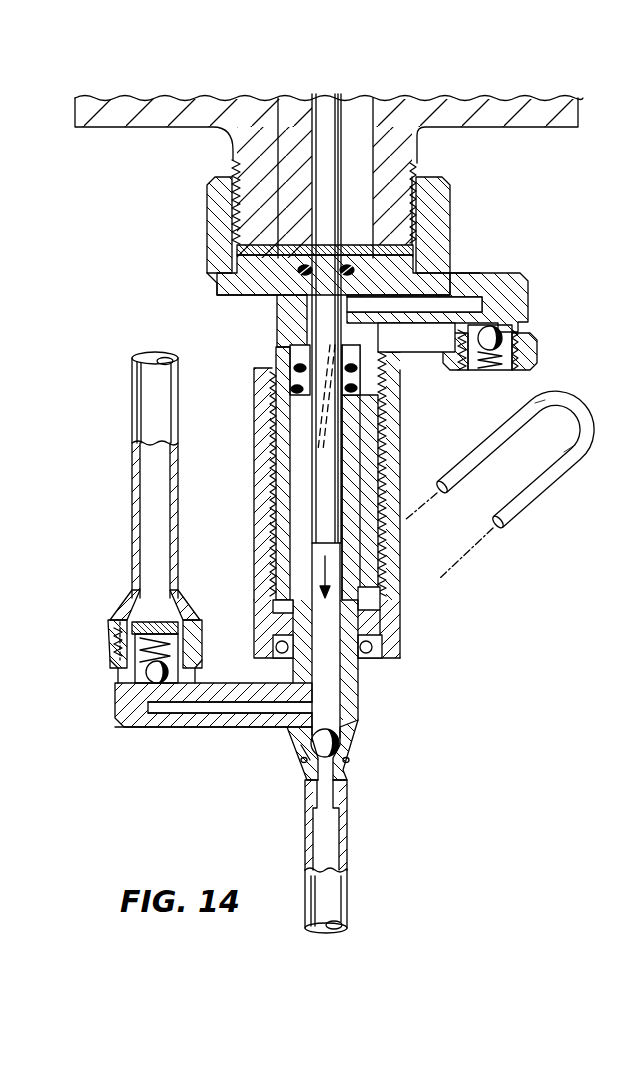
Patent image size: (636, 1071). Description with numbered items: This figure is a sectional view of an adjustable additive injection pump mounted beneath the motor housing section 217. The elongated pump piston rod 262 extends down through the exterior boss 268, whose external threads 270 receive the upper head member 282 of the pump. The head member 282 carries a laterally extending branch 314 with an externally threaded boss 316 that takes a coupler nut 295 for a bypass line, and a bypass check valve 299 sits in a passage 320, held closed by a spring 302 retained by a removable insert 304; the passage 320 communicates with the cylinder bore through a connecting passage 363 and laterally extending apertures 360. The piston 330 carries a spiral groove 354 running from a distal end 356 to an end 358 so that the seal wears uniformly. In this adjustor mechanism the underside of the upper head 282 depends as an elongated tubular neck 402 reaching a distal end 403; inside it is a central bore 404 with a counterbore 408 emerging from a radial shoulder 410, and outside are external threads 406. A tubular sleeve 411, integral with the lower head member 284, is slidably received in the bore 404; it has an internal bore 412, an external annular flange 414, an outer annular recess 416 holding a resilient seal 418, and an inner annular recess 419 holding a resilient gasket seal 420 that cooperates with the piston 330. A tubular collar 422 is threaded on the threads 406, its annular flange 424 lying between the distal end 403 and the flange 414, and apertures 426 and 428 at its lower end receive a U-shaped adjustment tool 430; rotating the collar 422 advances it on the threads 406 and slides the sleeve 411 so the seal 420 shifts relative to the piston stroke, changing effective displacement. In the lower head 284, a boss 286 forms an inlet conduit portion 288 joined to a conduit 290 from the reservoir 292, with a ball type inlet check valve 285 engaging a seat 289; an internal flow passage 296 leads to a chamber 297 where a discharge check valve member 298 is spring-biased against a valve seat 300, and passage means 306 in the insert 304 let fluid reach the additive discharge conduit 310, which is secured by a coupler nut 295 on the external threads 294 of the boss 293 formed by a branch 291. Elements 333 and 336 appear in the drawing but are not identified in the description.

The housing section 217 is at (528, 127).
The pump piston rod 262 is at (343, 97).
The exterior boss 268 is at (418, 134).
The external threads 270 is at (452, 225).
The upper head member 282 is at (207, 252).
The lower head member 284 is at (360, 717).
The inlet check valve 285 is at (340, 744).
The boss 286 is at (349, 768).
The inlet conduit portion 288 is at (348, 802).
The seat 289 is at (303, 763).
The conduit 290 is at (348, 903).
The branch 291 is at (186, 738).
The reservoir 292 is at (625, 429).
The boss 293 is at (115, 706).
The external threads 294 is at (110, 630).
The coupler nut 295 is at (112, 616).
The internal flow passage 296 is at (222, 714).
The chamber 297 is at (112, 652).
The discharge check valve member 298 is at (188, 665).
The bypass check valve 299 is at (522, 342).
The valve seat 300 is at (120, 677).
The spring 302 is at (182, 645).
The removable insert 304 is at (176, 615).
The passage means 306 is at (186, 634).
The additive discharge conduit 310 is at (133, 456).
The laterally extending branch 314 is at (530, 280).
The externally threaded boss 316 is at (528, 336).
The passage 320 is at (495, 303).
The piston 330 is at (378, 422).
The thread 333 is at (238, 235).
The shoulder 336 is at (210, 280).
The spiral groove 354 is at (412, 215).
The distal end 356 is at (362, 545).
The end 358 is at (410, 173).
The laterally extending apertures 360 is at (395, 285).
The connecting passage 363 is at (475, 285).
The tubular neck 402 is at (270, 442).
The distal end 403 is at (385, 596).
The central bore 404 is at (296, 416).
The external threads 406 is at (386, 452).
The counterbore 408 is at (298, 312).
The radial shoulder 410 is at (378, 341).
The tubular sleeve 411 is at (352, 472).
The internal bore 412 is at (380, 612).
The external annular flange 414 is at (382, 640).
The annular recess 416 is at (282, 362).
The resilient seal 418 is at (292, 389).
The annular recess 419 is at (396, 383).
The resilient gasket seal 420 is at (385, 367).
The tubular collar 422 is at (394, 584).
The annular flange 424 is at (262, 598).
The aperture 426 is at (284, 654).
The aperture 428 is at (368, 656).
The U-shaped adjustment tool 430 is at (560, 472).